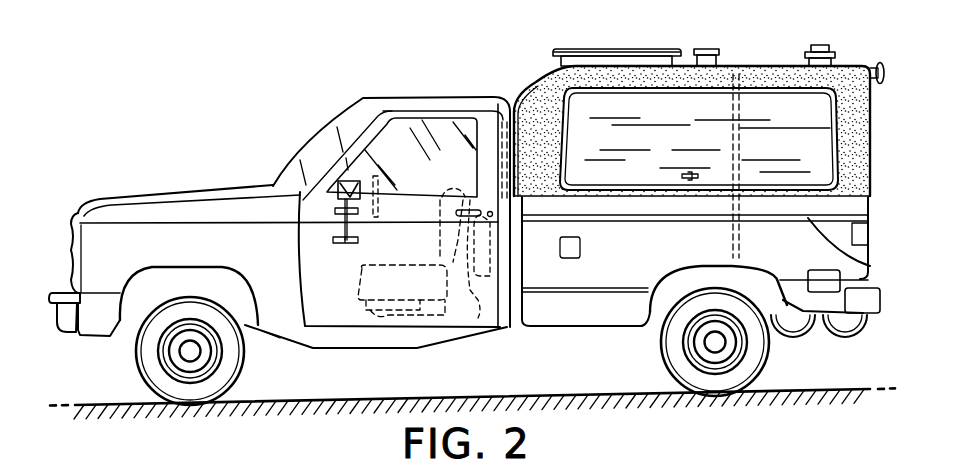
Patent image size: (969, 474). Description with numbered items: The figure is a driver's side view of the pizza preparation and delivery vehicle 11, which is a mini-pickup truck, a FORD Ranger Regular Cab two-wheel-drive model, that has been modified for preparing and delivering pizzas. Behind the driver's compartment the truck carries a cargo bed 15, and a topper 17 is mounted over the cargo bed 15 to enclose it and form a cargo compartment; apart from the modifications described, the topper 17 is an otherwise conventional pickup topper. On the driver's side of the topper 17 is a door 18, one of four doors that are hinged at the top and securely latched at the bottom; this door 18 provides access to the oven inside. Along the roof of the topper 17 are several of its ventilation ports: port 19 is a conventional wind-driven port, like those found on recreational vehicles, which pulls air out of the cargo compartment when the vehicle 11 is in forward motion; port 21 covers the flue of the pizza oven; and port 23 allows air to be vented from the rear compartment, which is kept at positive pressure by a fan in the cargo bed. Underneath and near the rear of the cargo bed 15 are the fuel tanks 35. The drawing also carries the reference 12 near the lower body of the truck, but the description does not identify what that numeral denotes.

The pizza preparation and delivery vehicle 11 is at (491, 82).
The vehicle frame / bed 12 is at (525, 292).
The cargo bed 15 is at (870, 263).
The topper 17 is at (757, 65).
The door 18 is at (810, 144).
The port 19 is at (605, 48).
The port 21 is at (706, 48).
The port 23 is at (820, 45).
The fuel tanks 35 is at (842, 330).